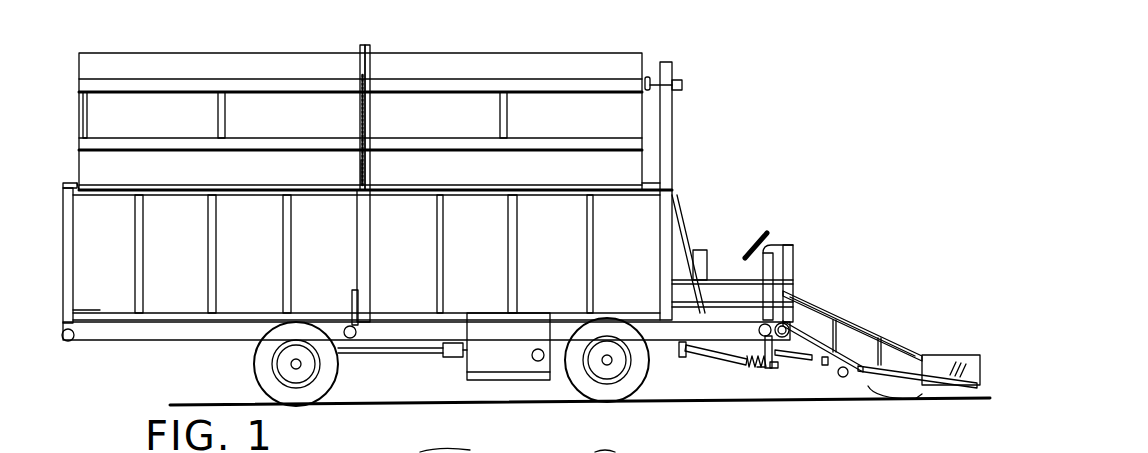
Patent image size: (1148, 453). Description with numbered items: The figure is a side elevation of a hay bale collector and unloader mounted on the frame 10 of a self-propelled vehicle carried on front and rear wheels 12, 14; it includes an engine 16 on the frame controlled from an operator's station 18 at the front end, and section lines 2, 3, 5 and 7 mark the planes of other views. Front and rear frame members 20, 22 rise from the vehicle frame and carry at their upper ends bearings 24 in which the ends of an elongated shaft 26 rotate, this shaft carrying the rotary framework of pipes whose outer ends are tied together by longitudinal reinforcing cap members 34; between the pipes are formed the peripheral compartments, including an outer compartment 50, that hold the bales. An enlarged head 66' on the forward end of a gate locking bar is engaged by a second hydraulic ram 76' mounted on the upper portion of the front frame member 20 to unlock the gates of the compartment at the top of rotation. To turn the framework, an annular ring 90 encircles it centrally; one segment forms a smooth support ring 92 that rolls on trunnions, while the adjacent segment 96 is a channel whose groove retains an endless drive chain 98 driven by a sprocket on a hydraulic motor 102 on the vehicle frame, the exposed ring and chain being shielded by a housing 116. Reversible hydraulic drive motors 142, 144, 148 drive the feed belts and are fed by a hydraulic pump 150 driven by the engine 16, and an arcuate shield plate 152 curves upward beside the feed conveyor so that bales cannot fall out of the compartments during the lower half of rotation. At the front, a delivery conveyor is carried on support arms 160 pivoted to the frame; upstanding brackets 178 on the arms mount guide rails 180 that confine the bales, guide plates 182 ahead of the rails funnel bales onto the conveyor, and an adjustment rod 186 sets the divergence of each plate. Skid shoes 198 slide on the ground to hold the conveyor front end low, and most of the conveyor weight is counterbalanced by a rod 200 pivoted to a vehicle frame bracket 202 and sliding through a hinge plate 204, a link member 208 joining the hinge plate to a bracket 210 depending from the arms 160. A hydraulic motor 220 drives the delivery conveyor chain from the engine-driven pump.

The frame 10 is at (128, 334).
The front wheels 12 is at (606, 396).
The rear wheels 14 is at (296, 398).
The engine 16 is at (492, 347).
The operator's station 18 is at (784, 226).
The front frame member 20 is at (672, 137).
The rear frame member 22 is at (70, 245).
The bearings 24 is at (65, 183).
The elongated shaft 26 is at (76, 182).
The reinforcing cap members 34 is at (561, 133).
The outer compartment 50 is at (517, 438).
The enlarged head 66' is at (657, 56).
The second hydraulic ram 76' is at (685, 96).
The annular ring 90 is at (355, 115).
The support ring 92 is at (371, 120).
The longitudinal segment 96 is at (360, 46).
The endless drive chain 98 is at (360, 175).
The hydraulic motor 102 is at (373, 365).
The housing 116 is at (358, 243).
The reversible hydraulic drive motor 142 is at (70, 342).
The reversible hydraulic drive motor 144 is at (349, 326).
The reversible hydraulic drive motor 148 is at (757, 368).
The hydraulic pump 150 is at (540, 363).
The arcuate shield plate 152 is at (250, 290).
The support arms 160 is at (810, 340).
The upstanding brackets 178 is at (857, 323).
The guide rails 180 is at (840, 320).
The guide plates 182 is at (948, 362).
The adjustment rod 186 is at (945, 388).
The skid shoes 198 is at (892, 396).
The rod 200 is at (728, 363).
The vehicle frame bracket 202 is at (676, 358).
The hinge plate 204 is at (767, 370).
The link member 208 is at (802, 358).
The bracket 210 is at (815, 364).
The hydraulic motor 220 is at (845, 378).
The section line 2- 2 is at (680, 72).
The section line 3- 3 is at (62, 312).
The section line 5- 5 is at (380, 65).
The section line 7- 7 is at (148, 290).